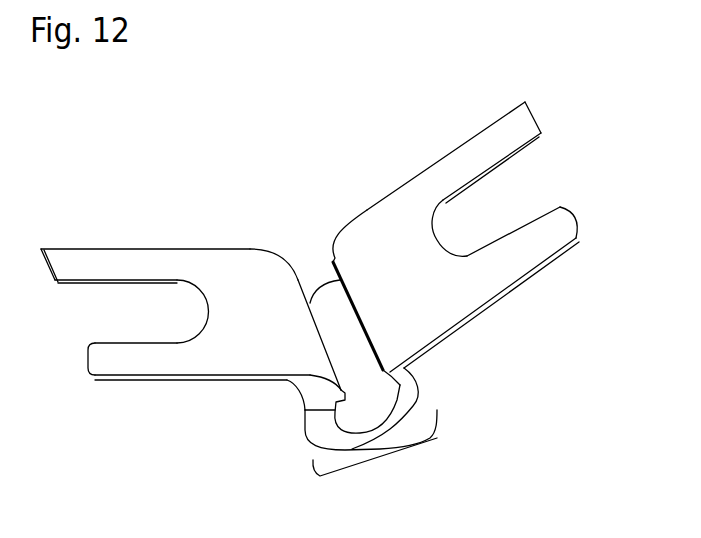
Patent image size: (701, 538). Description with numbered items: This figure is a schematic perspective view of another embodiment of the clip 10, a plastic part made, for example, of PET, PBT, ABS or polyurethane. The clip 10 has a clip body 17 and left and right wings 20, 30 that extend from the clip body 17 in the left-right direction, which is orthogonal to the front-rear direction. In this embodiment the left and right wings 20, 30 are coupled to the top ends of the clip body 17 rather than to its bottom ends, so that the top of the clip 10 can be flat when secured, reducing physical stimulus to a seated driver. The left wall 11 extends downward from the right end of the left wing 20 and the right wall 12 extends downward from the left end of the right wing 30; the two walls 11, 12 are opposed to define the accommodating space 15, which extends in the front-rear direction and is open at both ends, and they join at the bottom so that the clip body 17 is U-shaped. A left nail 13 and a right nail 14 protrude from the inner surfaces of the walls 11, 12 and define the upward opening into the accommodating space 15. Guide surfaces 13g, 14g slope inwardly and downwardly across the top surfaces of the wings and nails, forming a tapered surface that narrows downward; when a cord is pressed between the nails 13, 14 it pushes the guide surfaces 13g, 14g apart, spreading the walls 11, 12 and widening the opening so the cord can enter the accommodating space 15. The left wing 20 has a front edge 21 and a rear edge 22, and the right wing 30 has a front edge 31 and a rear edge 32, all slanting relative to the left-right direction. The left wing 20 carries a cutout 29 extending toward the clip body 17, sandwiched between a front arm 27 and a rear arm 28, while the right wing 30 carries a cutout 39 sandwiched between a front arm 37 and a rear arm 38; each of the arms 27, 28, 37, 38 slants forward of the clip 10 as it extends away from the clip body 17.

The clip 10 is at (112, 160).
The left wall 11 is at (313, 432).
The right wall 12 is at (420, 403).
The left nail 13 is at (303, 408).
The guide surface 13g is at (277, 258).
The right nail 14 is at (395, 382).
The guide surface 14g is at (350, 247).
The accommodating space 15 is at (382, 410).
The clip body 17 is at (378, 455).
The left wing 20 is at (145, 380).
The front edge 21 is at (158, 248).
The rear edge 22 is at (213, 377).
The front arm 27 is at (108, 266).
The rear arm 28 is at (97, 364).
The cutout 29 is at (154, 327).
The right wing 30 is at (568, 243).
The front edge 31 is at (418, 175).
The rear edge 32 is at (512, 275).
The front arm 37 is at (497, 138).
The rear arm 38 is at (563, 220).
The cutout 39 is at (503, 225).